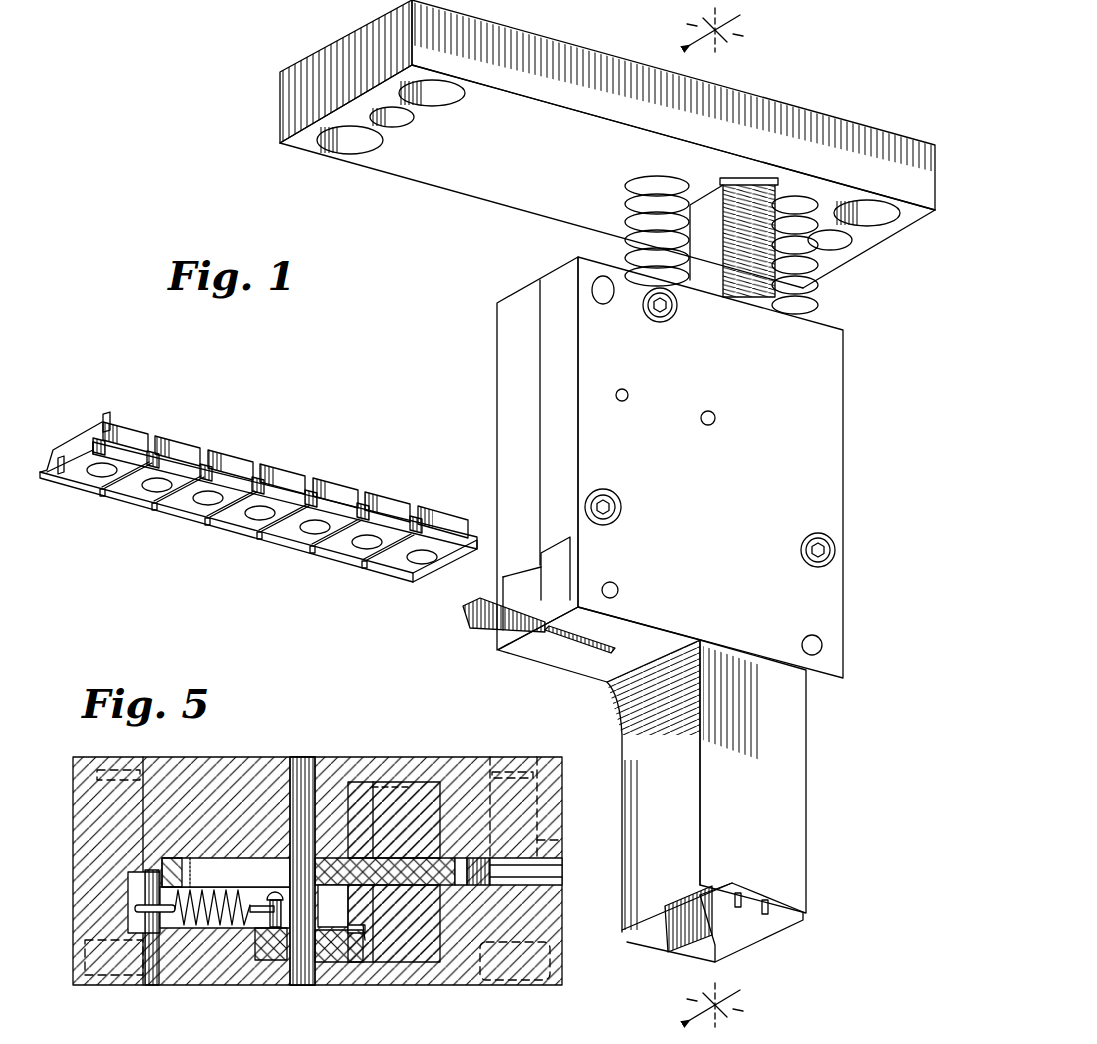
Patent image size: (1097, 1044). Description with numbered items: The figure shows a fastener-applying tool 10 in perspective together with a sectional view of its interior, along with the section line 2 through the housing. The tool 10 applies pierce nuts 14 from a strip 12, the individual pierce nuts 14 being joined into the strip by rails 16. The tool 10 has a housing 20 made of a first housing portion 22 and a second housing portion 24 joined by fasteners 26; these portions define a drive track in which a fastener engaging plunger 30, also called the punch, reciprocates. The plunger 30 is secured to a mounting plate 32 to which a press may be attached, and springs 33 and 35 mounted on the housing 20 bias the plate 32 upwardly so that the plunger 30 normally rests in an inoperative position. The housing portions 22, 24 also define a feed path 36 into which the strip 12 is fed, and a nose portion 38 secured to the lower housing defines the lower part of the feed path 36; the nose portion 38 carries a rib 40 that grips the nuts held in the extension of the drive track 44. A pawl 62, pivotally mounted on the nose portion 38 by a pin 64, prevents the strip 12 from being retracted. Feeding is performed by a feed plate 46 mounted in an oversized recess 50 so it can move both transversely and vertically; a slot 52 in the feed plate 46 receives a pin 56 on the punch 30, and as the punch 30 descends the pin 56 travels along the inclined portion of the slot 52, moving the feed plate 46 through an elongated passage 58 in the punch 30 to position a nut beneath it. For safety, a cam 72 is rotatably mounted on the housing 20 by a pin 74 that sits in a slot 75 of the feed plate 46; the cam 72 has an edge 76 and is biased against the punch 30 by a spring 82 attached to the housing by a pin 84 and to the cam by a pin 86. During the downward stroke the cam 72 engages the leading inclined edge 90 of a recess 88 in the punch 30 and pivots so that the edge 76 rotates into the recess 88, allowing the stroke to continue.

In FIG. 1, the section line 2- 2 is at (723, 517).
In FIG. 1, the tool 10 is at (910, 358).
In FIG. 5, the tool 10 is at (286, 711).
In FIG. 1, the strip 12 is at (249, 485).
In FIG. 1, the pierce nuts 14 is at (283, 470).
In FIG. 1, the rails 16 is at (120, 435).
In FIG. 1, the housing 20 is at (850, 490).
In FIG. 5, the housing 20 is at (72, 800).
In FIG. 1, the first housing portion 22 is at (503, 342).
In FIG. 5, the first housing portion 22 is at (78, 757).
In FIG. 1, the second housing portion 24 is at (840, 440).
In FIG. 5, the second housing portion 24 is at (75, 980).
In FIG. 1, the fasteners 26 is at (663, 325).
In FIG. 5, the fasteners 26 is at (546, 870).
In FIG. 1, the plunger 30 is at (752, 300).
In FIG. 5, the plunger 30 is at (358, 783).
In FIG. 1, the mounting plate 32 is at (625, 62).
In FIG. 1, the spring 33 is at (815, 290).
In FIG. 1, the spring 35 is at (628, 235).
In FIG. 1, the feed path 36 is at (535, 570).
In FIG. 1, the nose portion 38 is at (812, 790).
In FIG. 1, the rib 40 is at (742, 905).
In FIG. 1, the extension of the drive track 44 is at (688, 925).
In FIG. 5, the feed plate 46 is at (452, 855).
In FIG. 5, the recess 50 is at (160, 862).
In FIG. 5, the slot 52 is at (392, 940).
In FIG. 5, the pin 56 is at (392, 795).
In FIG. 5, the elongated passage 58 is at (438, 885).
In FIG. 1, the pawl 62 is at (462, 618).
In FIG. 1, the pin 64 is at (619, 590).
In FIG. 5, the cam 72 is at (252, 950).
In FIG. 1, the pin 74 is at (712, 425).
In FIG. 5, the pin 74 is at (295, 980).
In FIG. 5, the slot 75 is at (168, 860).
In FIG. 5, the edge 76 is at (345, 963).
In FIG. 5, the spring 82 is at (185, 932).
In FIG. 1, the pin 84 is at (623, 402).
In FIG. 5, the pin 84 is at (128, 880).
In FIG. 5, the pin 86 is at (280, 890).
In FIG. 5, the recess 88 is at (365, 936).
In FIG. 5, the leading inclined edge 90 is at (330, 968).